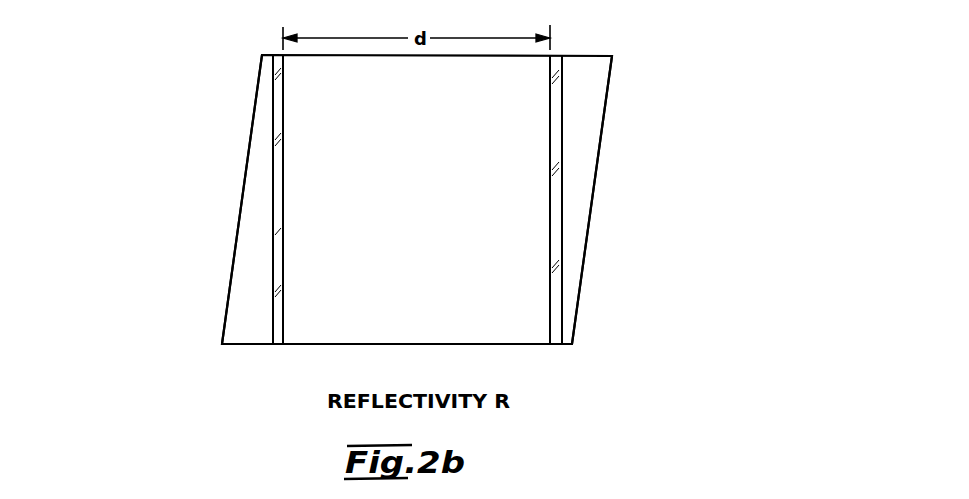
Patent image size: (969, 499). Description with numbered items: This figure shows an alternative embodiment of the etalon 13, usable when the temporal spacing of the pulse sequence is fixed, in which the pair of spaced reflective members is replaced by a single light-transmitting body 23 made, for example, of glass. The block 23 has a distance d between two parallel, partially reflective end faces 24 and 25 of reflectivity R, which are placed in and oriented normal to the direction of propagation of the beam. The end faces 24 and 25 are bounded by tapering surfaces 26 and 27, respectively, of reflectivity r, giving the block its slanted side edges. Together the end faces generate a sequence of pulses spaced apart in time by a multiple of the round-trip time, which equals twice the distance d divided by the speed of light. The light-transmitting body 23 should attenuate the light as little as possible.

The etalon plate 13 is at (623, 75).
The light-transmissive block 23 is at (432, 226).
The partially reflective end face 24 is at (283, 307).
The partially reflective end face 25 is at (550, 295).
The tapering surface 26 is at (242, 200).
The tapering surface 27 is at (726, 181).